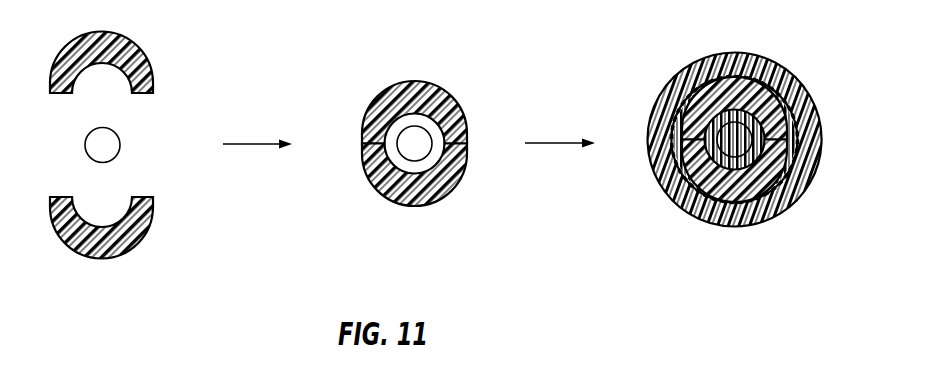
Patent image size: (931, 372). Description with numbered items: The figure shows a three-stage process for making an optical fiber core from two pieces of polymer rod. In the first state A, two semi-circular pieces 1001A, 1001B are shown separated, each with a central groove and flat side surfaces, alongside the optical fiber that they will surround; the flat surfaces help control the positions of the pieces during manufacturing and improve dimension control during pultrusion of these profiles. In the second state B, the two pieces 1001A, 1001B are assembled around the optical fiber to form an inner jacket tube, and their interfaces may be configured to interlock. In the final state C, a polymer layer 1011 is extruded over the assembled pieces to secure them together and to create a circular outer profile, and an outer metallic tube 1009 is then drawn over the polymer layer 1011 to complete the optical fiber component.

The semi-circular piece 1001A is at (140, 44).
The semi-circular piece 1001B is at (128, 252).
The outer metallic tube 1009 is at (735, 226).
The polymer layer 1011 is at (748, 57).
The state a A is at (128, 147).
The state b B is at (430, 147).
The state c C is at (735, 138).